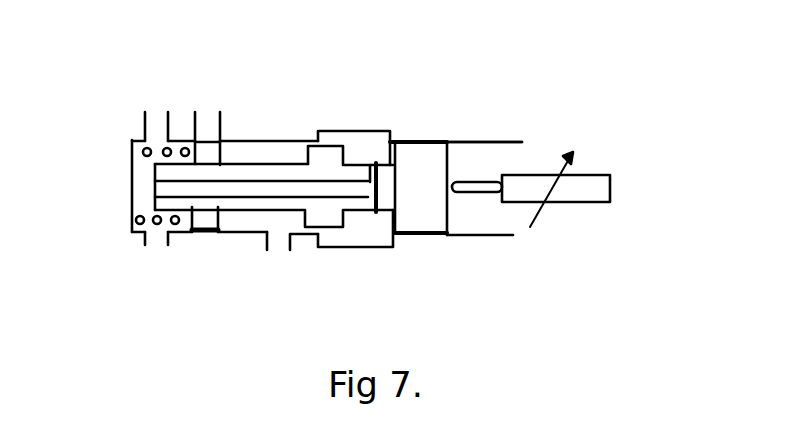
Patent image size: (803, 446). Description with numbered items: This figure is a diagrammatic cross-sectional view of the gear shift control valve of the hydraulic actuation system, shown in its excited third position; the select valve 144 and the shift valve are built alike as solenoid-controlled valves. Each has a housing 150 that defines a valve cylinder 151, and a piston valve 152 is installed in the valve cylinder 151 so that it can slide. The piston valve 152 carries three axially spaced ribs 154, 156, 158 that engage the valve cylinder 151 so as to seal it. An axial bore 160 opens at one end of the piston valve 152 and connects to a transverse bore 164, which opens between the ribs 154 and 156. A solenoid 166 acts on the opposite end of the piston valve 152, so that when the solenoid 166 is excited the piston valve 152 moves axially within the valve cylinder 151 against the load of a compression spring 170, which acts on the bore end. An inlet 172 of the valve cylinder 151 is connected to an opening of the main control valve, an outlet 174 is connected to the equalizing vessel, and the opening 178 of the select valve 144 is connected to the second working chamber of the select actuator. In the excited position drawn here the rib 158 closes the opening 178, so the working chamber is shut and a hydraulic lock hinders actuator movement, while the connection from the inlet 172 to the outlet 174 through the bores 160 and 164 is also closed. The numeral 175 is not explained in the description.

The select valve 144 is at (493, 143).
The housing 150 is at (522, 141).
The valve cylinder 151 is at (140, 214).
The piston valve 152 is at (485, 222).
The rib 154 is at (428, 187).
The rib 156 is at (324, 152).
The rib 158 is at (210, 233).
The axial bore 160 is at (165, 188).
The transverse bore 164 is at (413, 140).
The solenoid 166 is at (598, 188).
The compression spring 170 is at (167, 148).
The inlet 172 is at (280, 240).
The outlet 174 is at (162, 120).
The lower legs 175 is at (145, 246).
The opening 178 is at (207, 122).